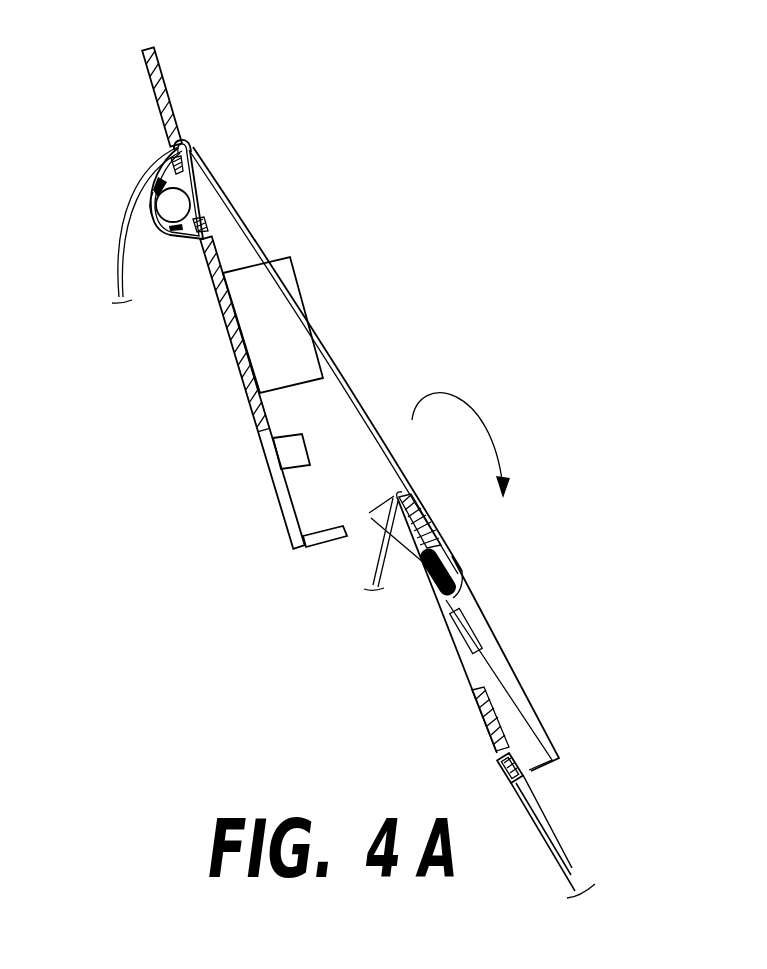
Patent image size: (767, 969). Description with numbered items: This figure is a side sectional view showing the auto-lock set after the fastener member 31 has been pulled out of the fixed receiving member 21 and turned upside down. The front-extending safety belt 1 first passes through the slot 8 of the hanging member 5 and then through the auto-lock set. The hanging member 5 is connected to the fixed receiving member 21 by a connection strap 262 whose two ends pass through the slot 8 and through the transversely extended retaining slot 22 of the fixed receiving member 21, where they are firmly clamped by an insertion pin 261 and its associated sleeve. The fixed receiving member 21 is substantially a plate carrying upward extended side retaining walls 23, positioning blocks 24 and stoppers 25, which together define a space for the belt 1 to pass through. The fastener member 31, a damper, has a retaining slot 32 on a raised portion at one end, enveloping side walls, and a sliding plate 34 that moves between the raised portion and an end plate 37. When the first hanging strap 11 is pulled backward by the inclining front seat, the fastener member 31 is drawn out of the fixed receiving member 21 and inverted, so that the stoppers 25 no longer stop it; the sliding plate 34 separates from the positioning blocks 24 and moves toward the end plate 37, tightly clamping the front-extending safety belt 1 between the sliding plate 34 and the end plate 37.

The front-extending safety belt 1 is at (118, 295).
The hanging member 5 is at (173, 102).
The slot 8 is at (183, 145).
The first hanging strap 11 is at (577, 883).
The fixed receiving member 21 is at (261, 429).
The retaining slot 22 is at (210, 240).
The side retaining wall 23 is at (296, 287).
The positioning block 24 is at (297, 462).
The stopper 25 is at (313, 550).
The insertion pin 261 is at (170, 202).
The connection strap 262 is at (190, 242).
The fastener member 31 is at (526, 708).
The retaining slot 32 is at (493, 750).
The sliding plate 34 is at (450, 574).
The end plate 37 is at (432, 542).